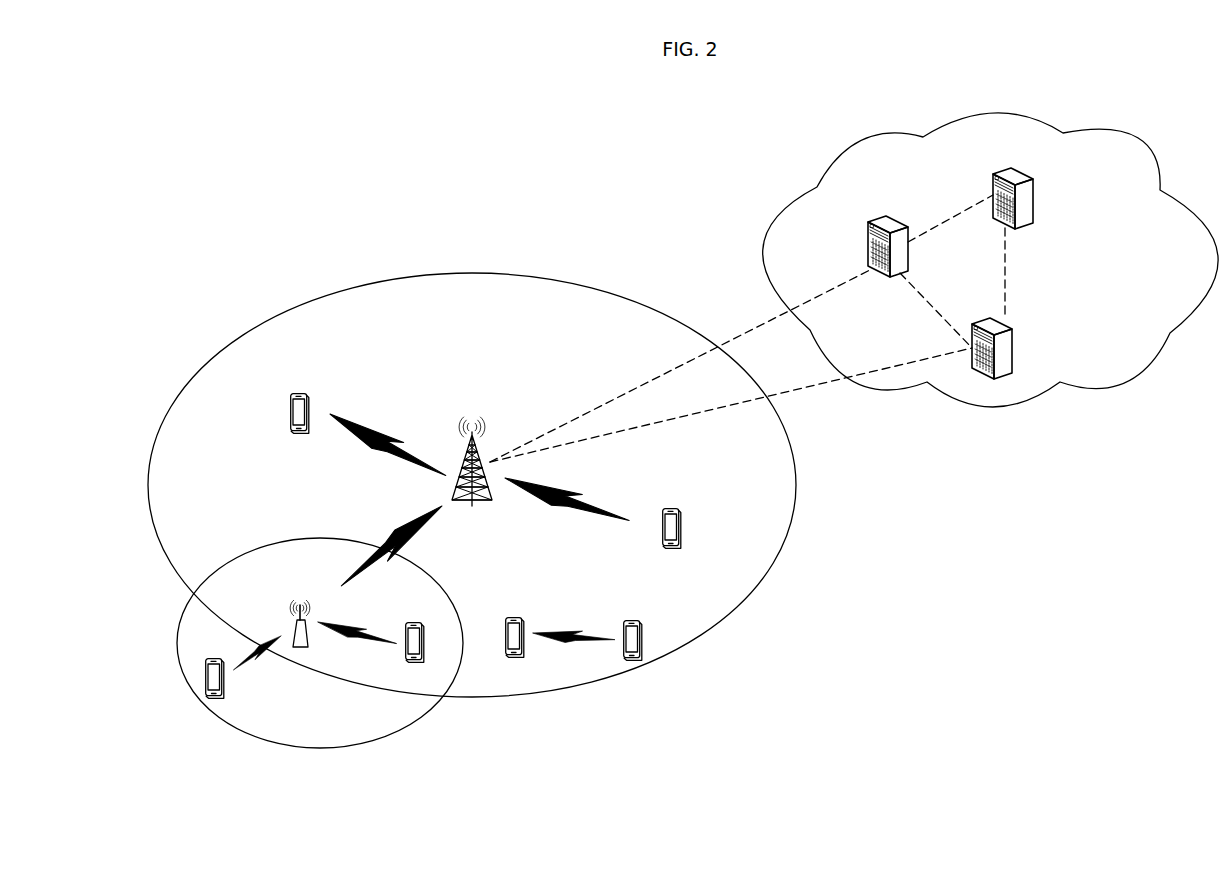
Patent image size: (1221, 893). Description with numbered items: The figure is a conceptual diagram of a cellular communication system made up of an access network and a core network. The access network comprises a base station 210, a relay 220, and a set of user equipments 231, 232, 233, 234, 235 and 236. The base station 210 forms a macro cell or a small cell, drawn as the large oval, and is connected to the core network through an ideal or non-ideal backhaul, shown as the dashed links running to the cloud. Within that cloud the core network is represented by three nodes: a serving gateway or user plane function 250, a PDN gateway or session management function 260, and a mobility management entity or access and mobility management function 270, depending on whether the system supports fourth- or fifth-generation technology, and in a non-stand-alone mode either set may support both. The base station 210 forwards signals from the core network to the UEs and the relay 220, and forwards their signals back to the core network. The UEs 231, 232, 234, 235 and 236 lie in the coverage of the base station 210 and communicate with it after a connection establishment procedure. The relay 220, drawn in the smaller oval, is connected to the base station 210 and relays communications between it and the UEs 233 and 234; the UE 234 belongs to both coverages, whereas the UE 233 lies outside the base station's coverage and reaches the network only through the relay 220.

The base station 210 is at (472, 434).
The relay 220 is at (300, 604).
The user equipment 231 is at (296, 392).
The user equipment 232 is at (668, 508).
The user equipment 233 is at (219, 698).
The user equipment 234 is at (415, 663).
The user equipment 235 is at (510, 617).
The user equipment 236 is at (628, 620).
The serving gateway 250 is at (884, 216).
The packet data network gateway 260 is at (1035, 193).
The mobility management entity 270 is at (1013, 345).